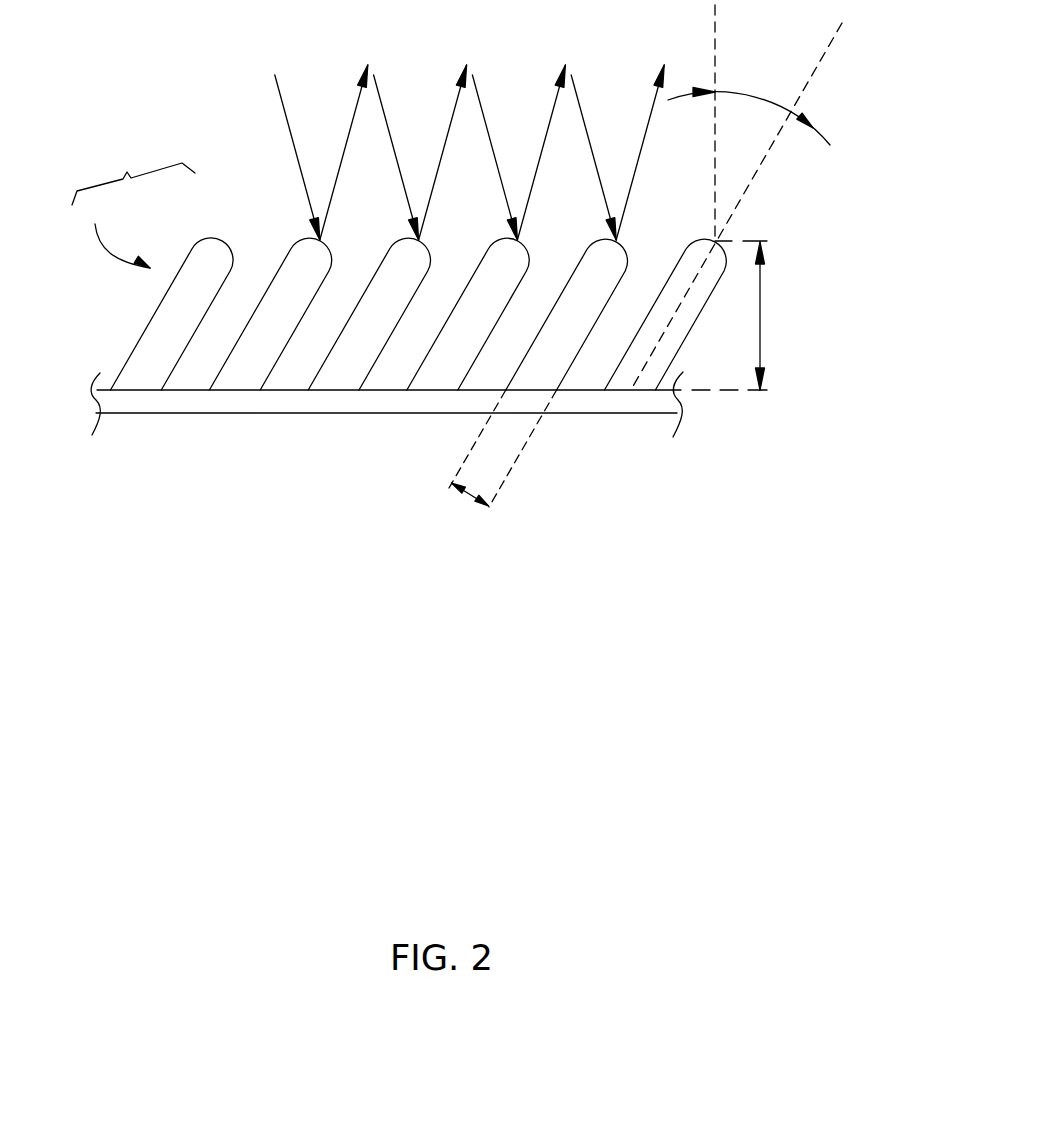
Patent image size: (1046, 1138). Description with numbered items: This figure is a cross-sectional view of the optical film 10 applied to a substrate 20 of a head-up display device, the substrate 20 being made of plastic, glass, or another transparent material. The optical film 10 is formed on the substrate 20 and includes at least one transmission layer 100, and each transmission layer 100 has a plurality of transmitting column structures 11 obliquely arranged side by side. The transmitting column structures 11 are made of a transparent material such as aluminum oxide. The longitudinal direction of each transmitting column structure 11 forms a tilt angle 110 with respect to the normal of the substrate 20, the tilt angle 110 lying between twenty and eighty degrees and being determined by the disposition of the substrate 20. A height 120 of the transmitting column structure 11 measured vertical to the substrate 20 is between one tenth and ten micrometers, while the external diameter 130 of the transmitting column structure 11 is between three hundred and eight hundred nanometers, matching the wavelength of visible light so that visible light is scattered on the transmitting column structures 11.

The optical film 10 is at (133, 174).
The transmission layer 100 is at (113, 232).
The transmitting column structure 11 is at (212, 250).
The substrate 20 is at (177, 403).
The tilt angle 110 is at (737, 196).
The height 120 is at (747, 315).
The external diameter 130 is at (498, 460).